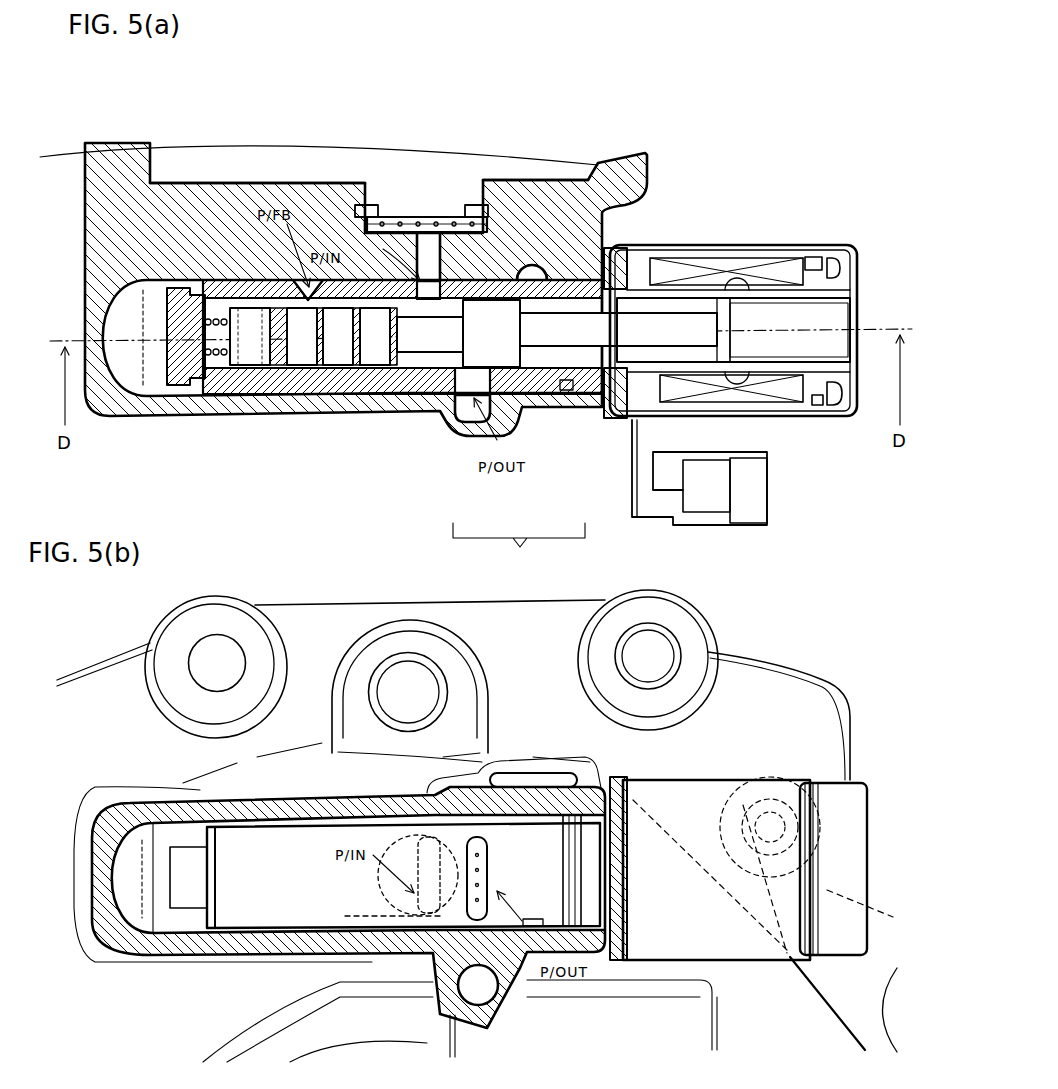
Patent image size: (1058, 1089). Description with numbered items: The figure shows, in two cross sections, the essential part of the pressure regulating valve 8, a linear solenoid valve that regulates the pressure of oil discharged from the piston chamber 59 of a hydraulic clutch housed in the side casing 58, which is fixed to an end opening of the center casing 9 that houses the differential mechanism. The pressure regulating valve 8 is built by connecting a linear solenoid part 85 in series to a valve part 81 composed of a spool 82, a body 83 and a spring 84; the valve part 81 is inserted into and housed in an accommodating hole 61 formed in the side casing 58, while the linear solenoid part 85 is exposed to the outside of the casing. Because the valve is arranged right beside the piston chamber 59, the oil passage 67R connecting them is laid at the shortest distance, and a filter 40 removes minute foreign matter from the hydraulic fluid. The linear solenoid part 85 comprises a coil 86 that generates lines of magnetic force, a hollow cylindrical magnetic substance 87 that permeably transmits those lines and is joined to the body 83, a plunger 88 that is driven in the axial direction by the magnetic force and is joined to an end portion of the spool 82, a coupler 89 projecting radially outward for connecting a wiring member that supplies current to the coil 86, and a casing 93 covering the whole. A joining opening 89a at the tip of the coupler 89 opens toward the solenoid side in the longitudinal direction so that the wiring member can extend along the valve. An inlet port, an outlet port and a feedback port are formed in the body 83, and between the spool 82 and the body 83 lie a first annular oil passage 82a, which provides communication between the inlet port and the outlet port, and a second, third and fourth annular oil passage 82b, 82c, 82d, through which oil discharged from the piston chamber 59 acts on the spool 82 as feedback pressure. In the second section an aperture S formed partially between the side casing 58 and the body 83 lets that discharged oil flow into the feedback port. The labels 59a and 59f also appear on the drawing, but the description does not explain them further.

In FIG. 5A, the pressure regulating valve 8 is at (519, 549).
In FIG. 5B, the center casing 9 is at (757, 707).
In FIG. 5A, the filter 40 is at (445, 214).
In FIG. 5B, the filter 40 is at (387, 910).
In FIG. 5A, the side casing 58 is at (133, 190).
In FIG. 5B, the side casing 58 is at (130, 807).
In FIG. 5A, the piston chamber 59 is at (323, 163).
In FIG. 5A, the case body face portion 59f is at (240, 183).
In FIG. 5A, the case body boss portion 59a is at (503, 182).
In FIG. 5A, the accommodating hole 61 is at (603, 398).
In FIG. 5A, the oil passage 67R is at (497, 262).
In FIG. 5A, the valve part 81 is at (425, 479).
In FIG. 5A, the spool 82 is at (400, 372).
In FIG. 5A, the first annular oil passage 82a is at (470, 372).
In FIG. 5A, the second annular oil passage 82b is at (365, 372).
In FIG. 5A, the third annular oil passage 82c is at (330, 374).
In FIG. 5A, the fourth annular oil passage 82d is at (277, 374).
In FIG. 5A, the body 83 is at (343, 395).
In FIG. 5B, the body 83 is at (293, 832).
In FIG. 5A, the spring 84 is at (203, 400).
In FIG. 5A, the linear solenoid part 85 is at (588, 479).
In FIG. 5A, the coil 86 is at (763, 260).
In FIG. 5A, the magnetic substance 87 is at (800, 260).
In FIG. 5A, the plunger 88 is at (663, 327).
In FIG. 5A, the coupler 89 is at (749, 530).
In FIG. 5A, the joining opening 89a is at (770, 472).
In FIG. 5A, the casing 93 is at (775, 243).
In FIG. 5B, the aperture S is at (340, 920).